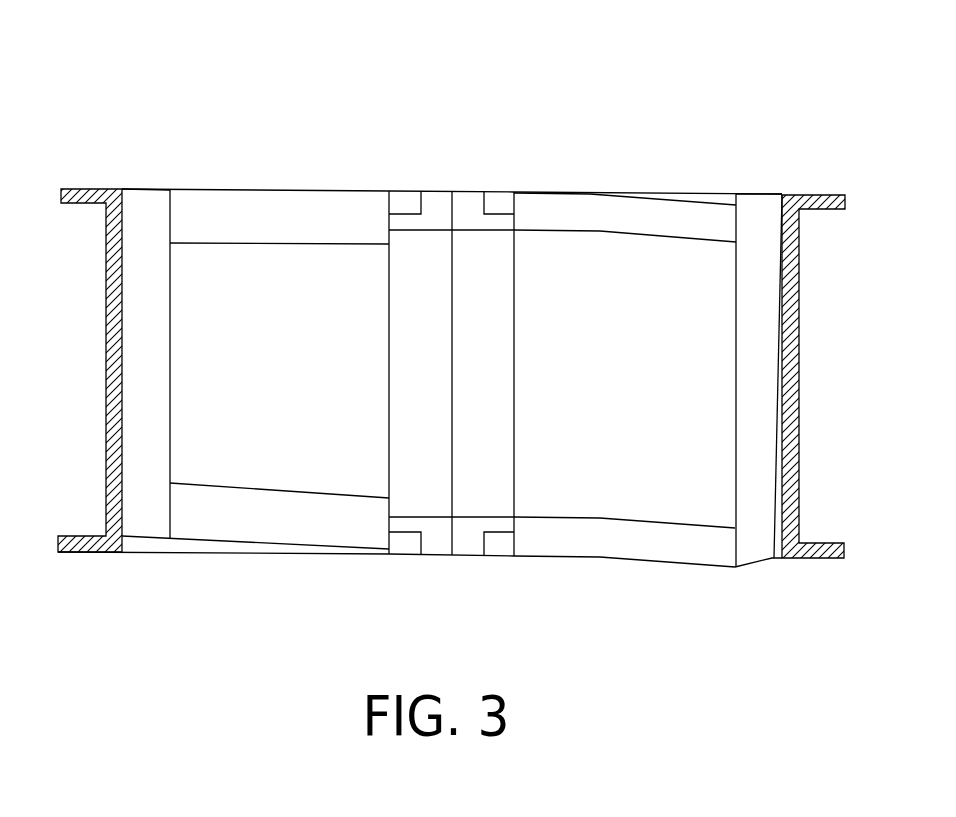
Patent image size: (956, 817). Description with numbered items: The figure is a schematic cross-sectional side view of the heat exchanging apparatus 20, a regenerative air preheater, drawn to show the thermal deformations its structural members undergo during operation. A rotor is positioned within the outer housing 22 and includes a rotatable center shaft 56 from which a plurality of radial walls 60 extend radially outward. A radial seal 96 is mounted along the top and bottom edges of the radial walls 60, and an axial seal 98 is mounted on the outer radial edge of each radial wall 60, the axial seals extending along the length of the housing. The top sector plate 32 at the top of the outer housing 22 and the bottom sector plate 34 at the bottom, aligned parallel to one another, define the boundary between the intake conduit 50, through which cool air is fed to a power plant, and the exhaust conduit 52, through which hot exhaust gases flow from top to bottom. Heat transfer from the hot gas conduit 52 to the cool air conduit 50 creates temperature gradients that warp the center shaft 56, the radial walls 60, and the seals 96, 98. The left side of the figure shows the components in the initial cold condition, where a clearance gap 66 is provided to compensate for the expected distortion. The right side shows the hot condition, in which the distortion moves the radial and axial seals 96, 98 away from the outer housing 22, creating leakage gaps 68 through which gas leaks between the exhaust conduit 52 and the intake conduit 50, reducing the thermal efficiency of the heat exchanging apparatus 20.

The heat exchanging apparatus 20 is at (741, 84).
The outer housing 22 is at (108, 472).
The top sector plate 32 is at (680, 190).
The bottom sector plate 34 is at (203, 553).
The intake conduit 50 is at (240, 432).
The exhaust conduit 52 is at (604, 439).
The center shaft 56 is at (493, 212).
The radial walls 60 is at (182, 375).
The clearance gap 66 is at (140, 545).
The leakage gaps 68 is at (753, 190).
The radial seal 96 is at (285, 212).
The axial seal 98 is at (135, 270).